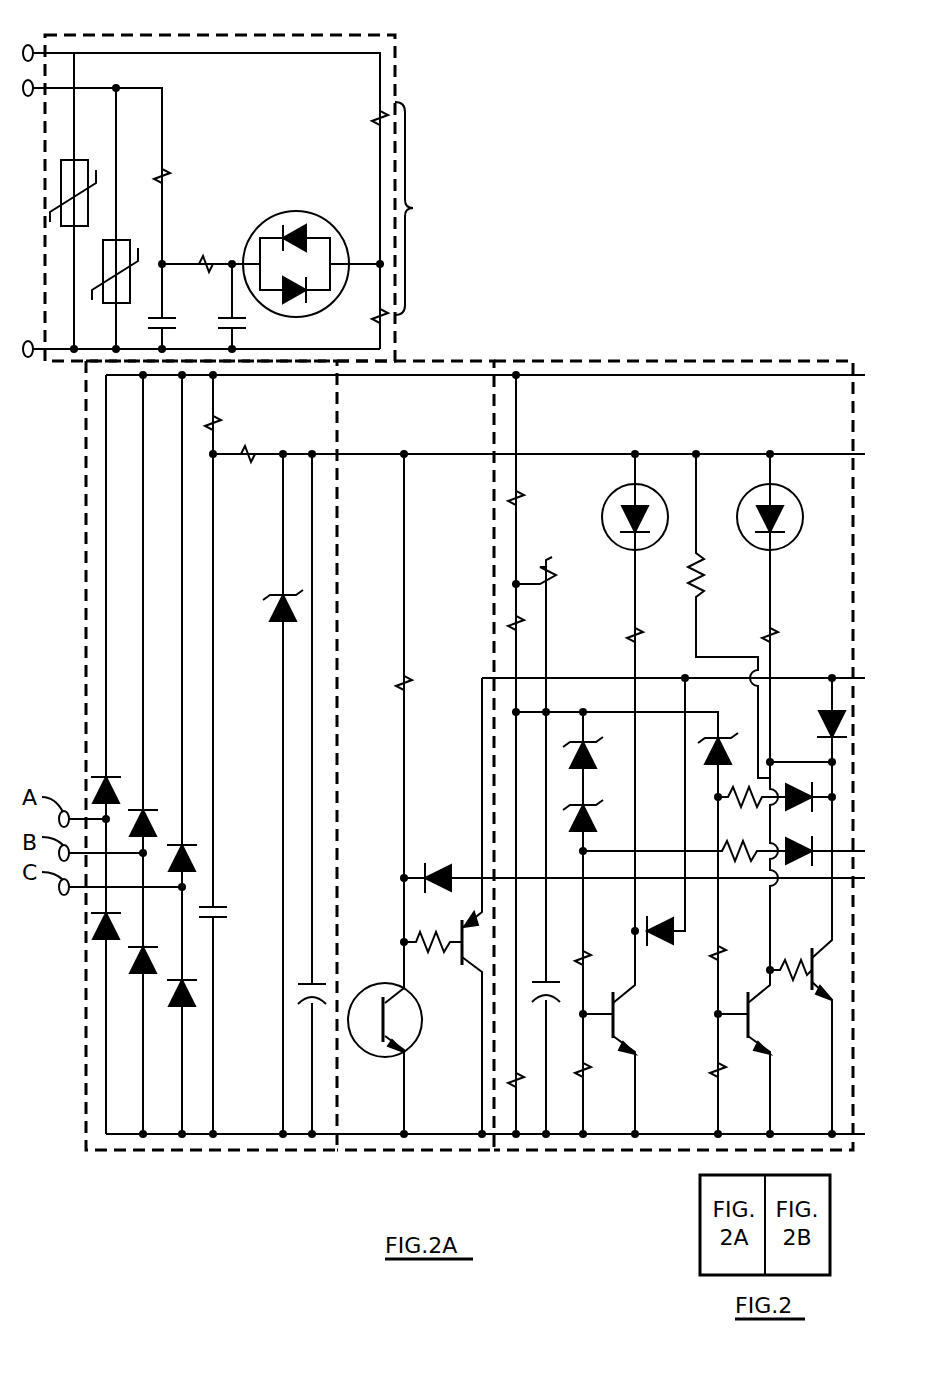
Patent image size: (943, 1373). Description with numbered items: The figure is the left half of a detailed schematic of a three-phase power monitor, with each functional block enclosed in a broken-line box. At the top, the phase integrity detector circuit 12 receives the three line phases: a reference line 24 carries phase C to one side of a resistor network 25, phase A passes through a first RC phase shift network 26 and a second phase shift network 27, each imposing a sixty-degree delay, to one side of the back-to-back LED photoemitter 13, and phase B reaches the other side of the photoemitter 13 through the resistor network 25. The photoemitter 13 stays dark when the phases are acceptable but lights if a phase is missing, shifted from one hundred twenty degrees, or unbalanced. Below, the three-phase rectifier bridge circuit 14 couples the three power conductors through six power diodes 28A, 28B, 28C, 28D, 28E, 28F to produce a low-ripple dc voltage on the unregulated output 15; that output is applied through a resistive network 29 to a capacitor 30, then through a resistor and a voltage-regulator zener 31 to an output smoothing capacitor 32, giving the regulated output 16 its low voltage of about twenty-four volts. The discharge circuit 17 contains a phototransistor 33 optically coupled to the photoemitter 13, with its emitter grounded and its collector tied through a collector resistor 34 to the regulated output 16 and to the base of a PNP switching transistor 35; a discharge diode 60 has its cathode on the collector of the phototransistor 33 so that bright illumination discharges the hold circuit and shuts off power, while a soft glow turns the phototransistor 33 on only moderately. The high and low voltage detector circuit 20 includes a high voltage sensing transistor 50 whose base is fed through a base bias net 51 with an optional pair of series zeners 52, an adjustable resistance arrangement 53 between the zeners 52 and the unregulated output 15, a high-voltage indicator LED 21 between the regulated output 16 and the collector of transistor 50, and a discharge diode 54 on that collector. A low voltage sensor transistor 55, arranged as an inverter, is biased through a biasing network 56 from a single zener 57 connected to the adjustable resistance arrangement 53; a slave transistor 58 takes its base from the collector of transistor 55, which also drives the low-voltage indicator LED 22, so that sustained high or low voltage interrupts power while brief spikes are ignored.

The phase integrity detector circuit 12 is at (263, 35).
The photoemitter 13 is at (262, 225).
The reference line 24 is at (140, 349).
The resistor network 25 is at (423, 208).
The first RC phase shift network 26 is at (148, 232).
The second phase shift network 27 is at (215, 330).
The three-phase rectifier bridge circuit 14 is at (225, 1152).
The unregulated output 15 is at (555, 375).
The regulated output 16 is at (407, 452).
The photoconductor-controlled discharge circuit 17 is at (395, 1152).
The high and low voltage detector circuit 20 is at (698, 362).
The high-voltage indicator LED 21 is at (612, 492).
The low-voltage indicator LED 22 is at (788, 550).
The power diode 28A is at (87, 792).
The power diode 28B is at (100, 937).
The power diode 28C is at (158, 826).
The power diode 28D is at (143, 973).
The power diode 28E is at (195, 862).
The power diode 28F is at (188, 1005).
The resistive network 29 is at (222, 420).
The capacitor 30 is at (215, 907).
The voltage-regulator zener 31 is at (283, 592).
The output smoothing capacitor 32 is at (305, 984).
The phototransistor 33 is at (405, 1048).
The collector resistor 34 is at (412, 683).
The PNP switching transistor 35 is at (475, 970).
The high voltage sensing transistor 50 is at (618, 1020).
The base bias net 51 is at (587, 950).
The pair of series zeners 52 is at (605, 833).
The adjustable resistance arrangement 53 is at (552, 575).
The discharge diode 54 is at (663, 925).
The low voltage sensor transistor 55 is at (760, 1020).
The biasing network 56 is at (712, 963).
The single zener 57 is at (722, 740).
The slave transistor 58 is at (825, 940).
The discharge diode 60 is at (440, 865).